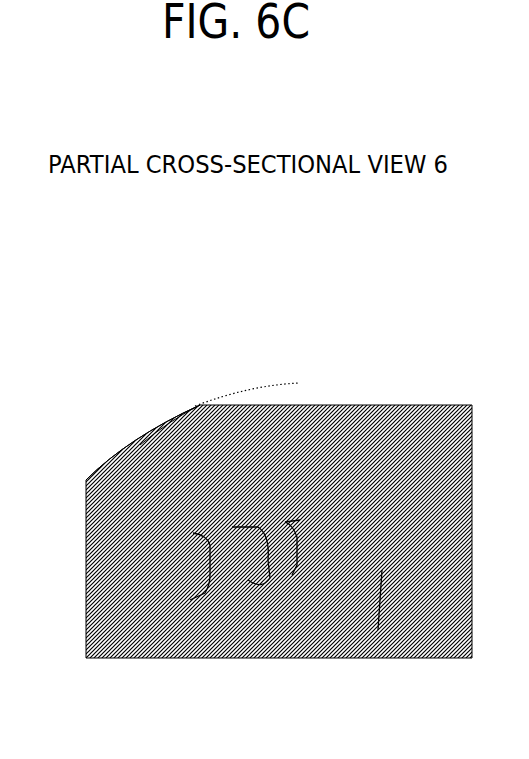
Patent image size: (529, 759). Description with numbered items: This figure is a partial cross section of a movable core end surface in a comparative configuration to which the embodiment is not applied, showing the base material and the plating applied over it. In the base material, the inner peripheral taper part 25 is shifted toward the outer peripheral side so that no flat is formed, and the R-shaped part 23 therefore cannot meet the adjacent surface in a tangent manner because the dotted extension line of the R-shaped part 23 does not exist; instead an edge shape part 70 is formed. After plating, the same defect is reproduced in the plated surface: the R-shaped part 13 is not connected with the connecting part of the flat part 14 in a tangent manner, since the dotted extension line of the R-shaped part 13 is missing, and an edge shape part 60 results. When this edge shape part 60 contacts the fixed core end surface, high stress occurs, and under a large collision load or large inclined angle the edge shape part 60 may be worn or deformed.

The R-shaped part 13 is at (163, 430).
The flat part 14 is at (372, 405).
The edge shape part 60 is at (190, 398).
The R-shaped part 23 is at (238, 540).
The inner peripheral taper part 25 is at (378, 630).
The edge shape part 70 is at (248, 580).